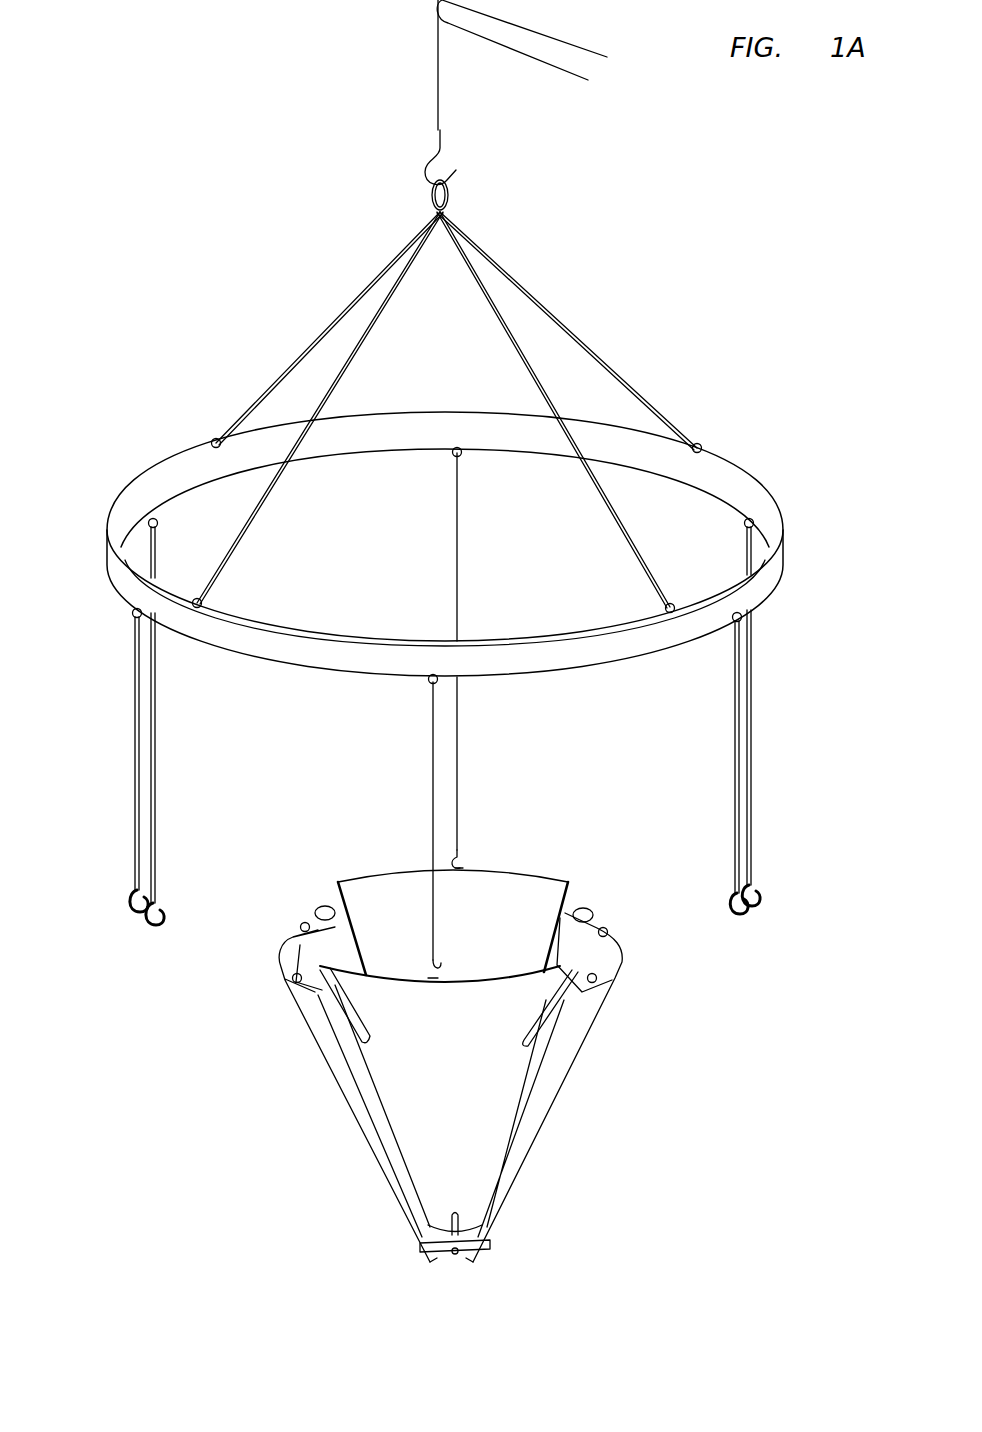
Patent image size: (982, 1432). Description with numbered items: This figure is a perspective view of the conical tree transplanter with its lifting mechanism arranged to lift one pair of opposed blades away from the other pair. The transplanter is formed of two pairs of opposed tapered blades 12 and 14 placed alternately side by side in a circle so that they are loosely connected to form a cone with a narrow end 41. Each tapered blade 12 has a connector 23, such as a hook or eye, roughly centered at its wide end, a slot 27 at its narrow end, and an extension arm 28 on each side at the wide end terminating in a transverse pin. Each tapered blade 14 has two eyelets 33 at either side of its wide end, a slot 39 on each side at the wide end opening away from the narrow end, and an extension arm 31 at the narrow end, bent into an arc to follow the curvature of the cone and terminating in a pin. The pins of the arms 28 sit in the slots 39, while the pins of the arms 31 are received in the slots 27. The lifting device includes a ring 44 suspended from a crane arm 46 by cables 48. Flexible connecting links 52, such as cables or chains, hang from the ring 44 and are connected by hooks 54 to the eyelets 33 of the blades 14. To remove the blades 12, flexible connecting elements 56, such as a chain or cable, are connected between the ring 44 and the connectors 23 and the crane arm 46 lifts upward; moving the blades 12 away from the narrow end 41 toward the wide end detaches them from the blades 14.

The tapered blade 12 is at (412, 885).
The tapered blade 14 is at (363, 1122).
The connector 23 is at (463, 870).
The slot 27 is at (458, 1217).
The extension arm 28 is at (318, 905).
The extension arm 31 is at (423, 1243).
The eyelet 33 is at (305, 926).
The slot 39 is at (318, 1036).
The narrow end 41 is at (512, 1236).
The ring 44 is at (773, 490).
The crane arm 46 is at (515, 55).
The cable 48 is at (362, 290).
The flexible connecting link 52 is at (133, 720).
The hook 54 is at (132, 905).
The flexible connecting element 56 is at (454, 556).